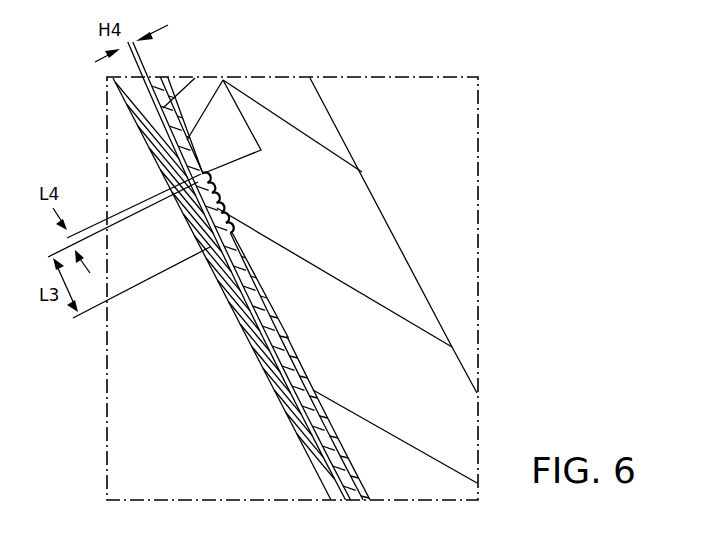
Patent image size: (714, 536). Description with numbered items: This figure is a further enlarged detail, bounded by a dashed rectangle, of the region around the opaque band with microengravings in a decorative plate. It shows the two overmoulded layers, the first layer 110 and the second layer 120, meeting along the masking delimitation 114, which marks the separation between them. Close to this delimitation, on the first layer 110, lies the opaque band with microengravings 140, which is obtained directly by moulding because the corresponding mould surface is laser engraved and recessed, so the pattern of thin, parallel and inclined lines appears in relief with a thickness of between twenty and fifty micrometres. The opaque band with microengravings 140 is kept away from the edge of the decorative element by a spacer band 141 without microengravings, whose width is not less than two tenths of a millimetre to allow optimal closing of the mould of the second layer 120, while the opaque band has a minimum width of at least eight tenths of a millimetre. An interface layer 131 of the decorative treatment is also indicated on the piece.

The first layer 110 is at (293, 98).
The masking delimitation 114 is at (202, 174).
The second layer 120 is at (215, 118).
The interface layer 131 is at (240, 263).
The opaque band with microengravings 140 is at (214, 196).
The spacer band 141 is at (203, 175).